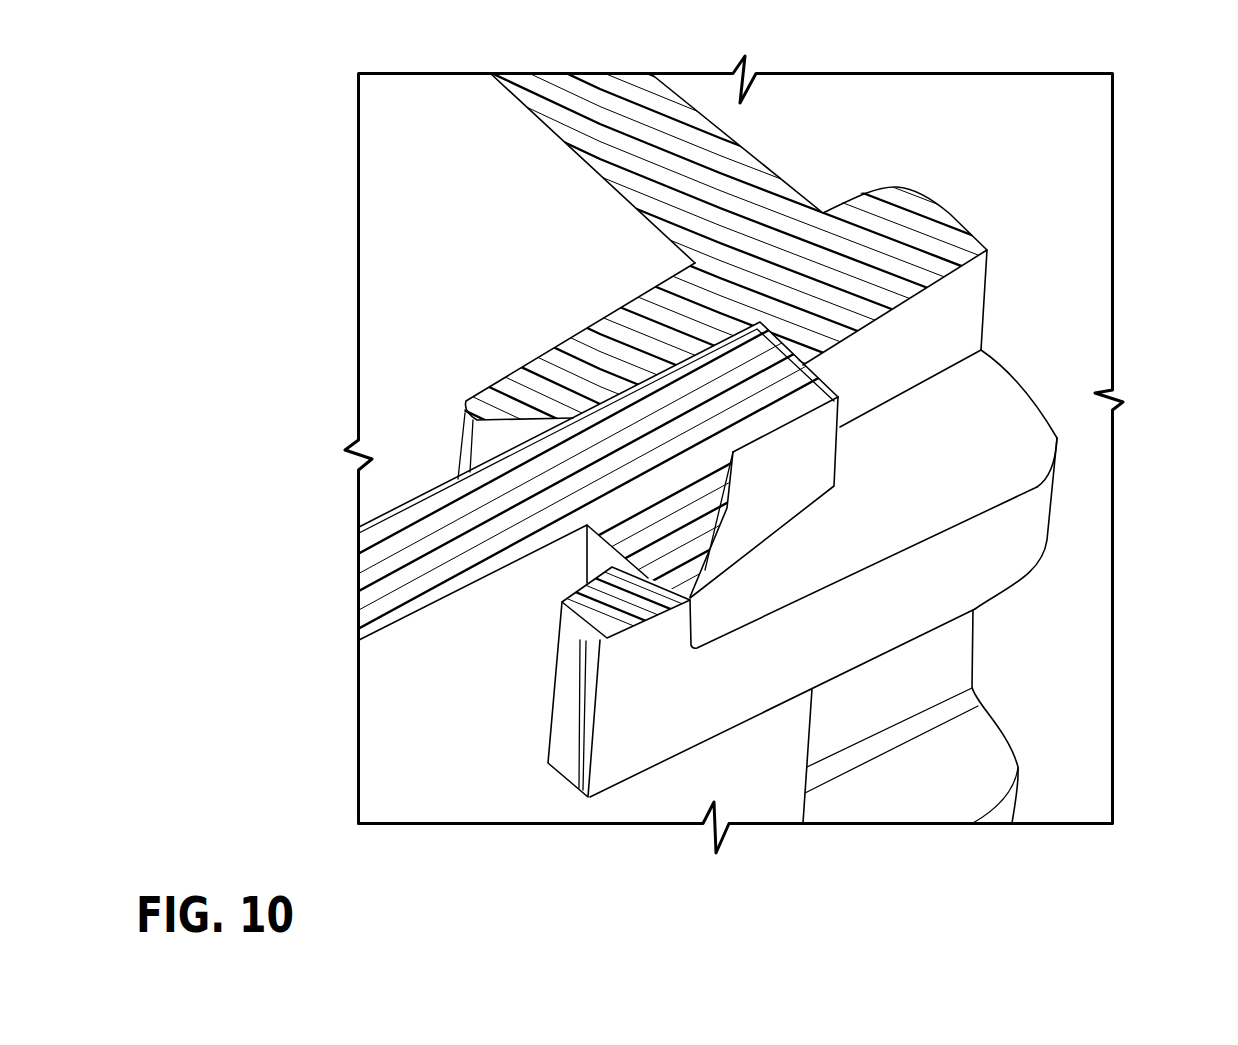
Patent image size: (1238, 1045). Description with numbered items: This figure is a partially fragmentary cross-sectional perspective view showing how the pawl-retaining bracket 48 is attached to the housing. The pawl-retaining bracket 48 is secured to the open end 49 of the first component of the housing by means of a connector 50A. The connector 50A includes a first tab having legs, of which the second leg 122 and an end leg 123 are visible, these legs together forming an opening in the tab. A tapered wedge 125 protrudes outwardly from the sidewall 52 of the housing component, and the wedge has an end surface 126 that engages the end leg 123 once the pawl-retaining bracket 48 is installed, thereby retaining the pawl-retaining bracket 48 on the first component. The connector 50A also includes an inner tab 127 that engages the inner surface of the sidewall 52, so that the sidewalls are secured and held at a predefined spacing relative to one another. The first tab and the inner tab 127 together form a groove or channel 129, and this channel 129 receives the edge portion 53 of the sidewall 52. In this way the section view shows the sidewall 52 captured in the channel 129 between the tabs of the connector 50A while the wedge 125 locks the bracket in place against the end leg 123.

The pawl-retaining bracket 48 is at (629, 315).
The open end 49 is at (807, 807).
The connector 50A is at (1062, 463).
The sidewall 52 is at (419, 673).
The edge portion 53 is at (817, 428).
The second leg 122 is at (738, 675).
The end leg 123 is at (615, 660).
The tapered wedge 125 is at (705, 522).
The end surface 126 is at (592, 555).
The inner tab 127 is at (563, 345).
The groove or channel 129 is at (500, 442).